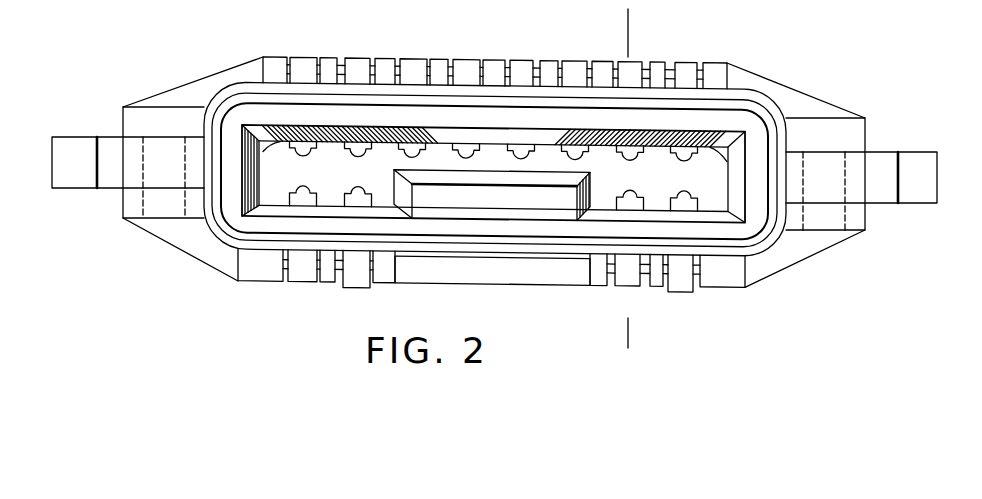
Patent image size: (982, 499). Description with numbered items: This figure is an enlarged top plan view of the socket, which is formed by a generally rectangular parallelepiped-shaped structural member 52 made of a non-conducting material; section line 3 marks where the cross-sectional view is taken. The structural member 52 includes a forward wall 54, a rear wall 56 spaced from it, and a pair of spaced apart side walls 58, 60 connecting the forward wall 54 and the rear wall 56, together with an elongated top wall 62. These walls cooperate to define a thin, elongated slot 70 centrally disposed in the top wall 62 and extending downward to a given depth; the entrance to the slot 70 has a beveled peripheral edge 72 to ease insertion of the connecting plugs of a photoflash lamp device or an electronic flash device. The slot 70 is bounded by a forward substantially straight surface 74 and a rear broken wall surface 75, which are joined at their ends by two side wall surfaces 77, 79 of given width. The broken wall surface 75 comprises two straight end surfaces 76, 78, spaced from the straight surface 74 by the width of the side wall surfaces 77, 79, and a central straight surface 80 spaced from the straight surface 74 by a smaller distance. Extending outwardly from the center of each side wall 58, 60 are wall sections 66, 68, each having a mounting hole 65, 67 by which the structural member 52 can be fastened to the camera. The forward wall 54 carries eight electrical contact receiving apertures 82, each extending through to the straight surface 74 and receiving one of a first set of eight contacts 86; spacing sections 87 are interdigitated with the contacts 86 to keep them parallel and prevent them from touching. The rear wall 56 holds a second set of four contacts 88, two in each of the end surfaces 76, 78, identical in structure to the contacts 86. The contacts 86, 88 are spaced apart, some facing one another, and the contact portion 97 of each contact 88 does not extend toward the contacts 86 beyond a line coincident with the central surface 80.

The section line 3- 3 is at (628, 19).
The structural member 52 is at (800, 93).
The forward wall 54 is at (411, 75).
The rear wall 56 is at (515, 258).
The side wall 58 is at (790, 134).
The side wall 60 is at (204, 134).
The top wall 62 is at (750, 98).
The mounting hole 65 is at (866, 159).
The wall section 66 is at (918, 152).
The mounting hole 67 is at (185, 192).
The wall section 68 is at (85, 137).
The slot 70 is at (720, 197).
The beveled peripheral edge 72 is at (327, 202).
The forward straight surface 74 is at (372, 149).
The rear broken wall surface 75 is at (589, 164).
The straight end surface 76 is at (272, 200).
The side wall surface 77 is at (283, 133).
The straight end surface 78 is at (653, 206).
The side wall surface 79 is at (713, 140).
The central straight surface 80 is at (475, 171).
The electrical contact receiving aperture 82 is at (650, 63).
The electrical contact 86 is at (671, 151).
The spacing section 87 is at (600, 62).
The contact 88 is at (372, 197).
The contact portion 97 is at (635, 190).